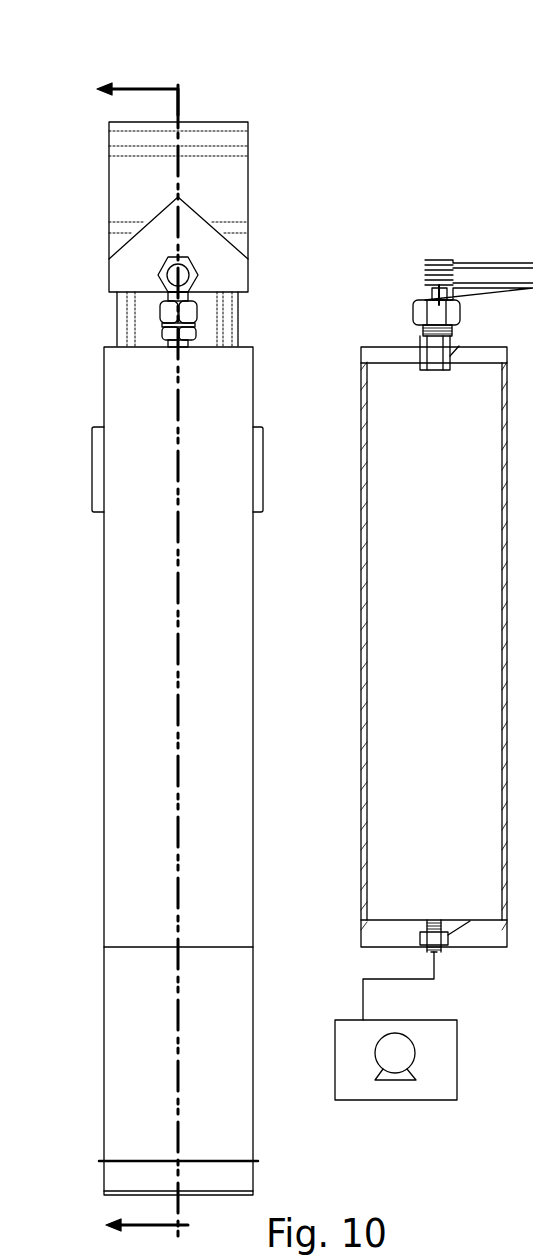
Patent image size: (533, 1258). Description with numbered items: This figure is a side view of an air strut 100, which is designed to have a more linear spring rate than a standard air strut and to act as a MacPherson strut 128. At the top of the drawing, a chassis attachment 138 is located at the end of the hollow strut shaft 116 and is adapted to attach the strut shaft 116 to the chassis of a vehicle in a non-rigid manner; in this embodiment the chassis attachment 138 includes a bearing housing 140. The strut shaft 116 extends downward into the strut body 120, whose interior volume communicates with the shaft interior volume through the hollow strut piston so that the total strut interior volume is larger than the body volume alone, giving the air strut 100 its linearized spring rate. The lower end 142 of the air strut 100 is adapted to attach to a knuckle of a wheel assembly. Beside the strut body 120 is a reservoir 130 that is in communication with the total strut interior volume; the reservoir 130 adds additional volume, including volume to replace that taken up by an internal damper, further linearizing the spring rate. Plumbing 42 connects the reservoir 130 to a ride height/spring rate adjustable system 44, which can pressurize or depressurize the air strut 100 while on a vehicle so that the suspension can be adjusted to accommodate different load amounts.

The air strut 100 is at (190, 626).
The MacPherson strut 128 is at (175, 63).
The chassis attachment 138 is at (229, 182).
The bearing housing 140 is at (216, 124).
The strut shaft 116 is at (130, 328).
The strut body 120 is at (130, 988).
The lower end 142 is at (104, 1193).
The reservoir 130 is at (358, 730).
The plumbing 42 is at (362, 1000).
The ride height/spring rate adjustable system 44 is at (458, 1070).